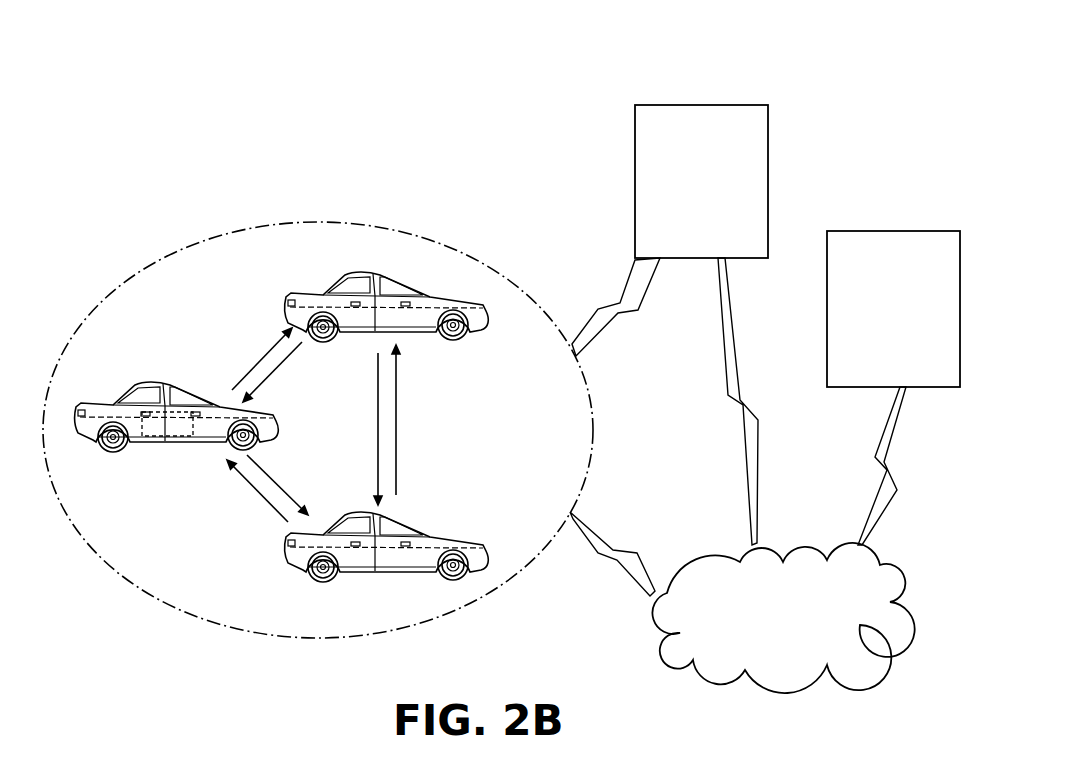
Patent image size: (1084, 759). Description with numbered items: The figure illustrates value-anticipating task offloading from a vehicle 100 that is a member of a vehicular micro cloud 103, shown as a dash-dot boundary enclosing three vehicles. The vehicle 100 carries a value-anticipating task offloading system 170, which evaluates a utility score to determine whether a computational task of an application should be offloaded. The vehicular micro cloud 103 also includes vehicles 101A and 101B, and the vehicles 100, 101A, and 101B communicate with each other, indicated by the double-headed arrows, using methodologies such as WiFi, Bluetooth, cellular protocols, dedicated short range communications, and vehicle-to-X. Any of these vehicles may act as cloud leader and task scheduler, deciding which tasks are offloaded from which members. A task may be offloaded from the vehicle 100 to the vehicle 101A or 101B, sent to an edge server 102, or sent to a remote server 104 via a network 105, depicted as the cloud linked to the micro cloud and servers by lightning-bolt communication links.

The vehicle 100 is at (143, 384).
The vehicle 101A is at (368, 277).
The vehicle 101B is at (300, 570).
The edge server 102 is at (717, 105).
The vehicular micro cloud 103 is at (216, 238).
The remote server 104 is at (900, 231).
The network 105 is at (874, 660).
The value-anticipating task offloading system 170 is at (150, 440).